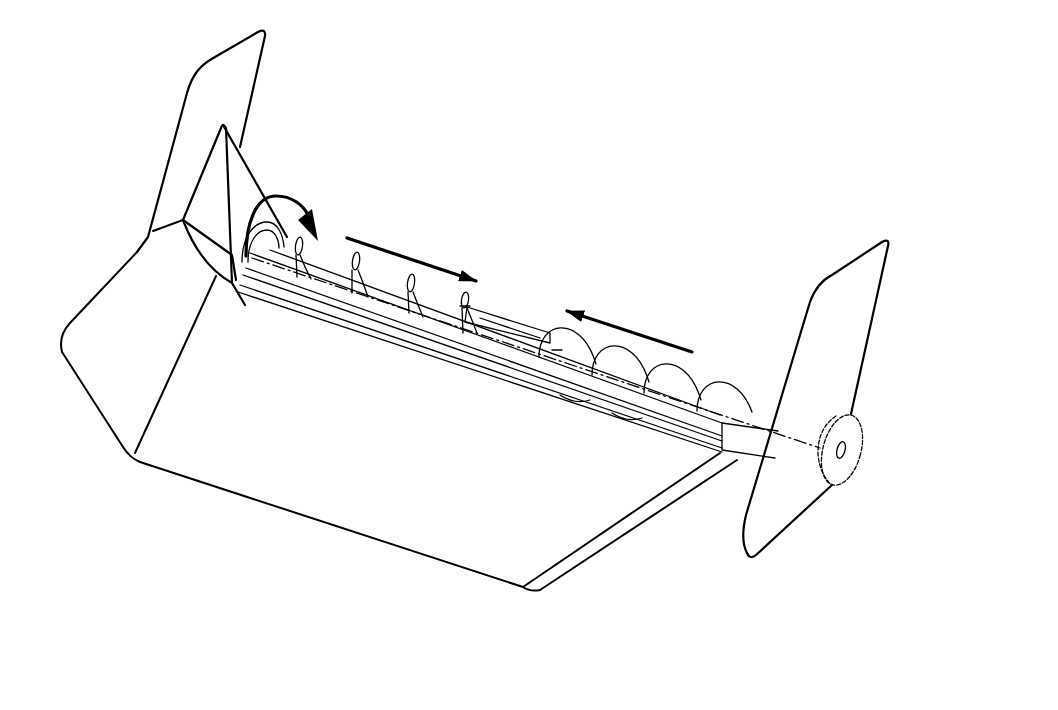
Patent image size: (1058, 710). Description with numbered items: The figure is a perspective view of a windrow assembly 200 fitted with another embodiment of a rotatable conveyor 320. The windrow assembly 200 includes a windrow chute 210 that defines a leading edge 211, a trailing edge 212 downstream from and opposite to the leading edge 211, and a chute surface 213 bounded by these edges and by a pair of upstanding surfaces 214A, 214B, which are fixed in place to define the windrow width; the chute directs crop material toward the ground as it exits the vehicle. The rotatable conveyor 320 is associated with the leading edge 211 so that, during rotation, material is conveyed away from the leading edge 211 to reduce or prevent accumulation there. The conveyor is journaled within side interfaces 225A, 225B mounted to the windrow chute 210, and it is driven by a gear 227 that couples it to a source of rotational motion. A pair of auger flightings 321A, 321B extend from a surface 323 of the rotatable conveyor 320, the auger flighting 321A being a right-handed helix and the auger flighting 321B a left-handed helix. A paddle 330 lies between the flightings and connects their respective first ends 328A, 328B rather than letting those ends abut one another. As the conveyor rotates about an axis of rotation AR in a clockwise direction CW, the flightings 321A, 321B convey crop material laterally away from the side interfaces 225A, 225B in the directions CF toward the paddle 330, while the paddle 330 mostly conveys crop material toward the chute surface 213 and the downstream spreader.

The windrow assembly 200 is at (641, 224).
The windrow chute 210 is at (218, 500).
The leading edge 211 is at (303, 317).
The trailing edge 212 is at (187, 480).
The chute surface 213 is at (487, 488).
The upstanding surface 214A is at (138, 341).
The upstanding surface 214B is at (603, 540).
The side interface 225A is at (250, 175).
The side interface 225B is at (773, 392).
The gear 227 is at (852, 466).
The rotatable conveyor 320 is at (516, 314).
The auger flighting 321A is at (360, 262).
The auger flighting 321B is at (690, 372).
The surface 323 is at (418, 302).
The first end 328A is at (467, 300).
The first end 328B is at (557, 345).
The paddle 330 is at (530, 330).
The clockwise direction CW is at (245, 210).
The arrows indicating lateral conveying directions CF is at (402, 253).
The axis of rotation AR is at (453, 322).